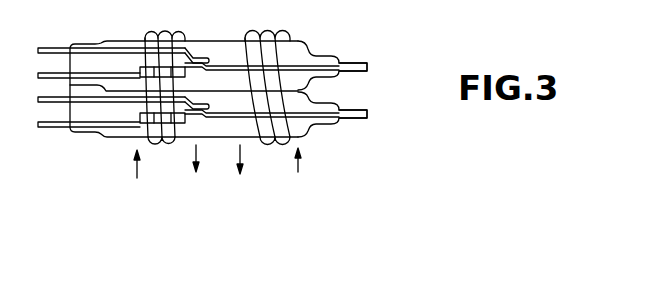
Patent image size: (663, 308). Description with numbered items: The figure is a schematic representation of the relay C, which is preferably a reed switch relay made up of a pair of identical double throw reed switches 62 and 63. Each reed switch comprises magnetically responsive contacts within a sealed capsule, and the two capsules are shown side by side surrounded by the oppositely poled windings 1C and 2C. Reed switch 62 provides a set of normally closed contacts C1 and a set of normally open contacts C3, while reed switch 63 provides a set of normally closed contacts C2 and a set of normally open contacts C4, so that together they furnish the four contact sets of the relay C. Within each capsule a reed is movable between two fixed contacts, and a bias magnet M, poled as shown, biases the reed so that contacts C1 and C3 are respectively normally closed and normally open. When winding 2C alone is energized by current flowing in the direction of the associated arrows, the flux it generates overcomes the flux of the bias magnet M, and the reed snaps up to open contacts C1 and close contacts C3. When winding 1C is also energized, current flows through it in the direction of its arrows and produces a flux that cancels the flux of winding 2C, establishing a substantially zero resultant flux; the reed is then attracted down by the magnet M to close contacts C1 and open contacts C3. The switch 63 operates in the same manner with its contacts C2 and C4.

The relay C is at (222, 35).
The winding 1C is at (148, 31).
The winding 2C is at (273, 31).
The normally closed contacts C1 is at (209, 66).
The normally closed contacts C2 is at (209, 113).
The normally open contacts C3 is at (209, 61).
The normally open contacts C4 is at (209, 107).
The bias magnet M is at (186, 73).
The double throw reed switch 62 is at (341, 56).
The double throw reed switch 63 is at (341, 102).